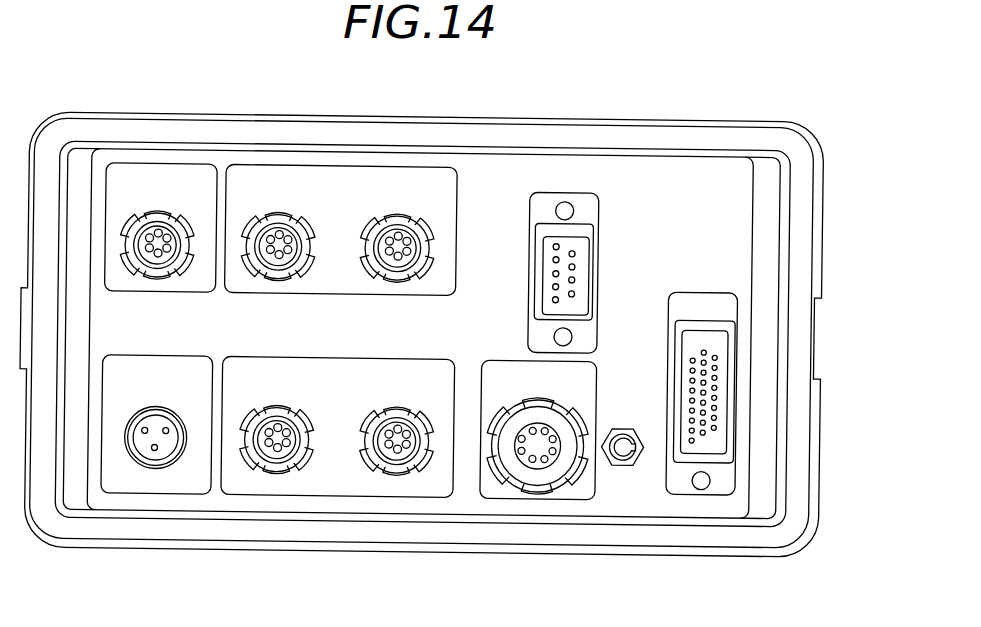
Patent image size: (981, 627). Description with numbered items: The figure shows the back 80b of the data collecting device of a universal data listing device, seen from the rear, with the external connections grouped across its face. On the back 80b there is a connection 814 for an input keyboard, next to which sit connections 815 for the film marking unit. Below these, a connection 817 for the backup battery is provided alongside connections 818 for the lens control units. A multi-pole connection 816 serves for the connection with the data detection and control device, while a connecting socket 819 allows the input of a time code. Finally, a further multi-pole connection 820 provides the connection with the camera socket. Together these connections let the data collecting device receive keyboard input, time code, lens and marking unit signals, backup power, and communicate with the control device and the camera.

The back of the data collecting device 80b is at (616, 117).
The connection for an input keyboard 814 is at (156, 178).
The connections for the film marking unit 815 is at (344, 181).
The multi-pole connection 816 is at (587, 211).
The connection for the backup battery 817 is at (159, 488).
The connections for the lens control units 818 is at (343, 488).
The connecting socket 819 is at (570, 490).
The multi-pole connection 820 is at (720, 482).